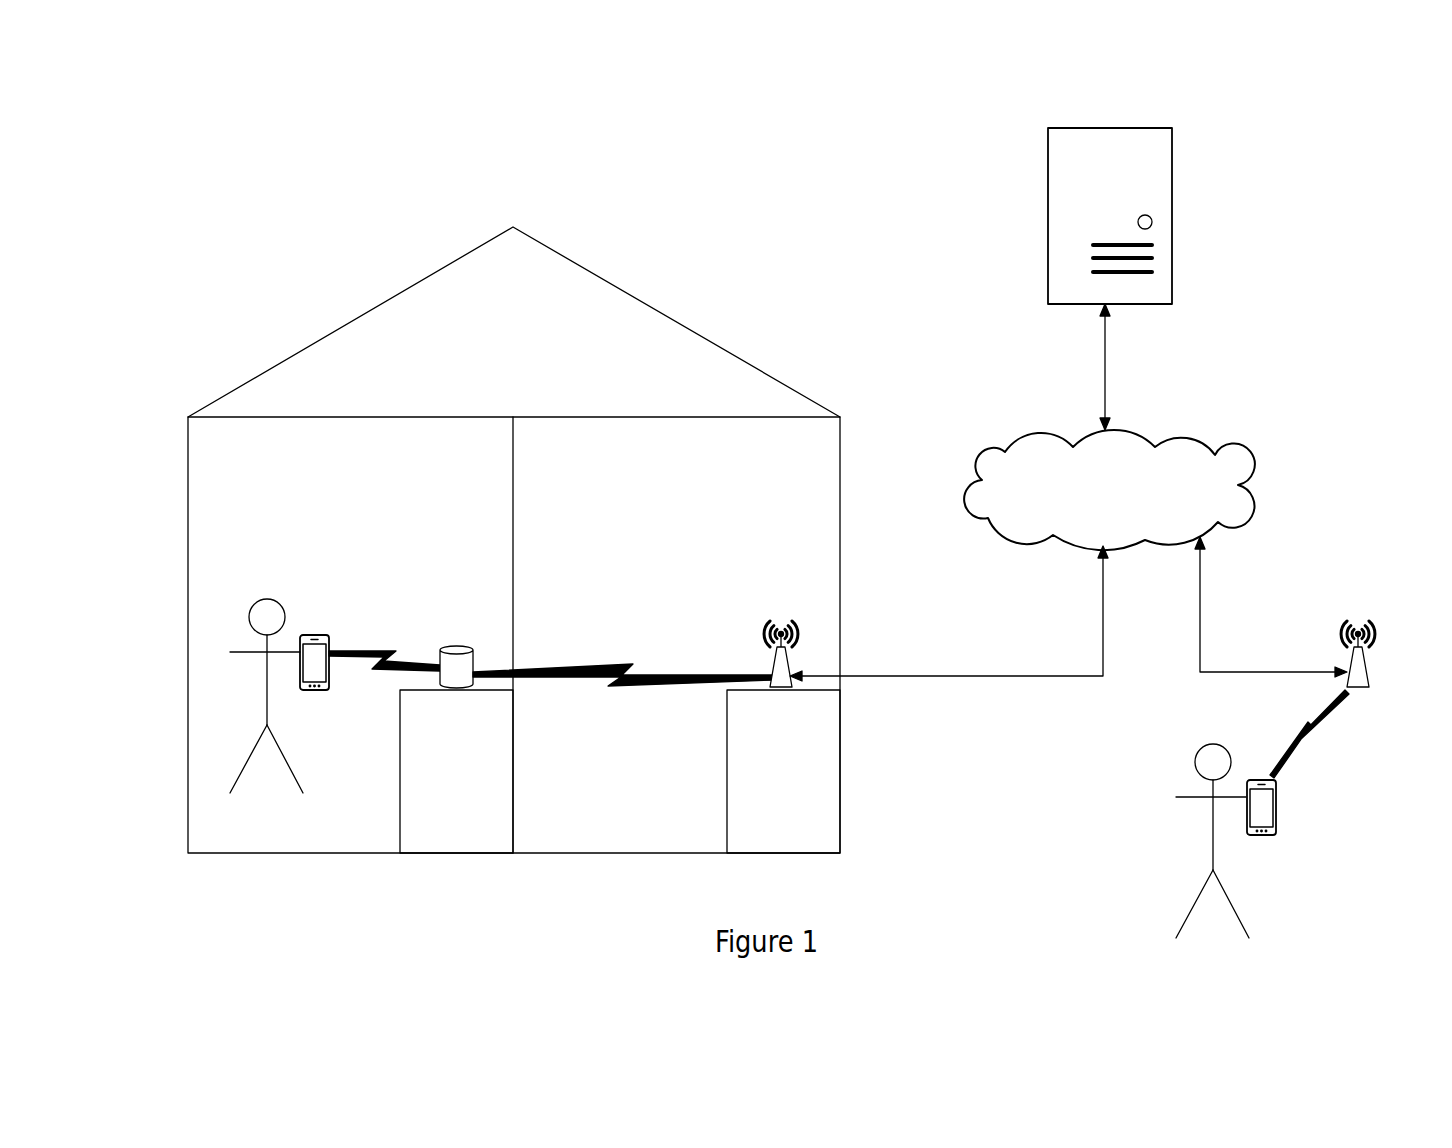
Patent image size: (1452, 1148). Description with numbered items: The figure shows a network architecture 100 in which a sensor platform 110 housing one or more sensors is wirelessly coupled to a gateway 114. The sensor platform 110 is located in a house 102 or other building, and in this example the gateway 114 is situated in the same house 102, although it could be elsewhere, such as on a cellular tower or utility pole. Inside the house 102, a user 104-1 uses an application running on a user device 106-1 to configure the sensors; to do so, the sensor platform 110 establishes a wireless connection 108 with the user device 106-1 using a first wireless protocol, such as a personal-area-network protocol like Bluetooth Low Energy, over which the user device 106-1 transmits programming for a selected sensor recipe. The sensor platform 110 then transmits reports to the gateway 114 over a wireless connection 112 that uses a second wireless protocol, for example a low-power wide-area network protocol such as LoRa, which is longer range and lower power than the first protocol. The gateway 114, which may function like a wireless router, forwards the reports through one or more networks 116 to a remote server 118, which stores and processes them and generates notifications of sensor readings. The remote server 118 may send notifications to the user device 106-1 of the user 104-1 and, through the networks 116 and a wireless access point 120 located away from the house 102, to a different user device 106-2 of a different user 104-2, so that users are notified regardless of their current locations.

The network architecture 100 is at (400, 82).
The house 102 is at (298, 351).
The user 104-1 is at (268, 598).
The different user 104-2 is at (1207, 744).
The user device 106-1 is at (311, 633).
The different user device 106-2 is at (1270, 836).
The wireless connection 108 is at (378, 650).
The sensor platform 110 is at (458, 650).
The wireless connection 112 is at (562, 672).
The gateway 114 is at (779, 632).
The networks 116 is at (1173, 491).
The remote server 118 is at (1093, 201).
The wireless access point 120 is at (1357, 632).